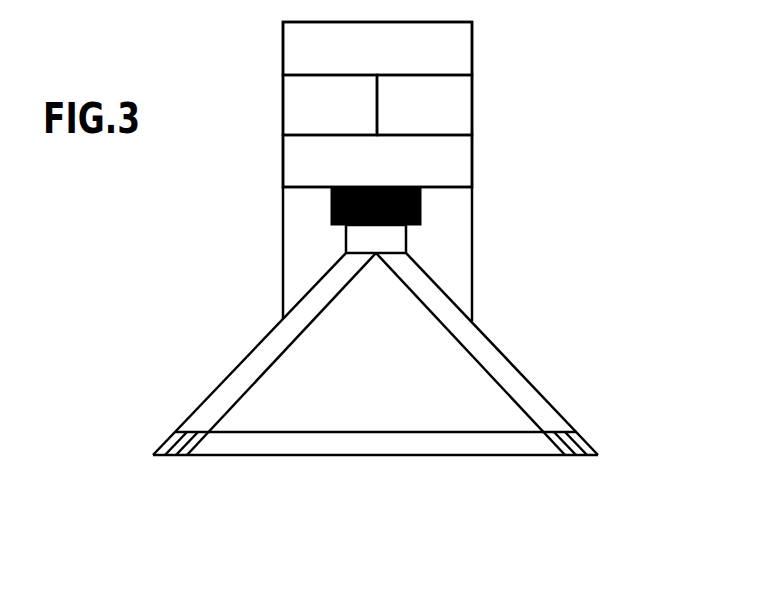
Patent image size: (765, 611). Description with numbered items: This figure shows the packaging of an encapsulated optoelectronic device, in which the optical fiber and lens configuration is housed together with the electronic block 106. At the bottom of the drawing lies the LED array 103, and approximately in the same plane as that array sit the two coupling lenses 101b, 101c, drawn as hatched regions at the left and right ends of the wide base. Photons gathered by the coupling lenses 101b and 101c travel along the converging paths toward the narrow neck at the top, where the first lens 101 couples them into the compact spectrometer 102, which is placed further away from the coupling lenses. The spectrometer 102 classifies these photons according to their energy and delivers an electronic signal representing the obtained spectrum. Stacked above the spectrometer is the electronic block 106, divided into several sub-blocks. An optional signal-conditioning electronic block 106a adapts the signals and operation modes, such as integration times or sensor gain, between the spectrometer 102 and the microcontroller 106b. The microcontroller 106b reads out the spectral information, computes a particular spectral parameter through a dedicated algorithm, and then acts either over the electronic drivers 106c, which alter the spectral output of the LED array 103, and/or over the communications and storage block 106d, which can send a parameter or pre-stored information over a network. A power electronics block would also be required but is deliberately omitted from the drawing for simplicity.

The first lens 101 is at (406, 237).
The coupling lens 101b is at (597, 447).
The coupling lens 101c is at (163, 443).
The spectrometer 102 is at (376, 206).
The LED array 103 is at (352, 457).
The electronic block 106 is at (430, 171).
The signal-conditioning electronic block 106a is at (377, 161).
The microcontroller 106b is at (330, 105).
The electronic drivers 106c is at (424, 105).
The communications and storage block 106d is at (377, 48).